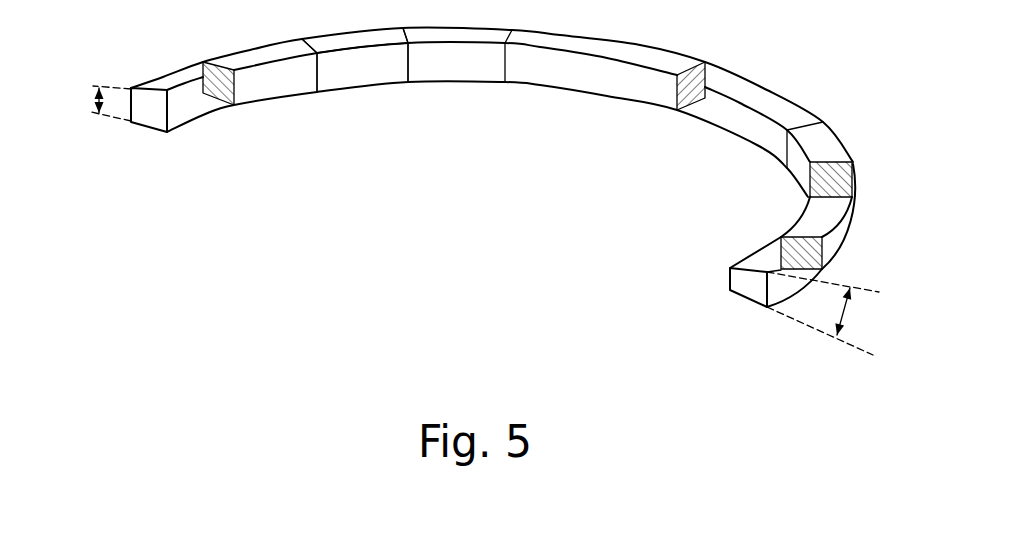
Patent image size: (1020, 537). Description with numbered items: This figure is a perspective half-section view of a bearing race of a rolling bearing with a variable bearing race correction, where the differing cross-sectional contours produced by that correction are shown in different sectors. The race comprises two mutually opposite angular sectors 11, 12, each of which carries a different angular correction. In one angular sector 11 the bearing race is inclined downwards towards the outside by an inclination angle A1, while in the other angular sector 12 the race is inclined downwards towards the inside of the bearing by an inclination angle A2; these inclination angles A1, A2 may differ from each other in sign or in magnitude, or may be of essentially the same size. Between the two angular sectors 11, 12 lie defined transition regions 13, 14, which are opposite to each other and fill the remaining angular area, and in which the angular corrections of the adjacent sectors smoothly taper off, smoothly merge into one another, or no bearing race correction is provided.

The angular sector 11 is at (266, 122).
The angular sector 12 is at (737, 252).
The transition region 13 is at (428, 110).
The transition region 14 is at (742, 160).
The inclination angle A1 is at (99, 100).
The inclination angle A2 is at (843, 312).